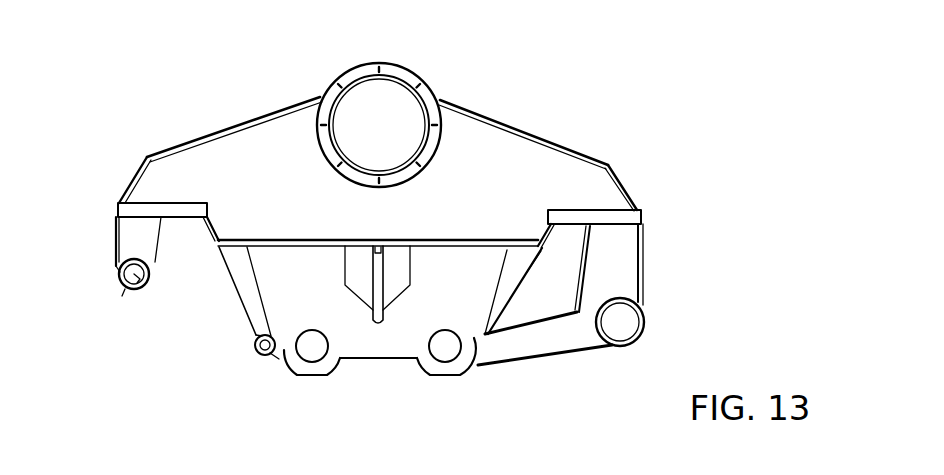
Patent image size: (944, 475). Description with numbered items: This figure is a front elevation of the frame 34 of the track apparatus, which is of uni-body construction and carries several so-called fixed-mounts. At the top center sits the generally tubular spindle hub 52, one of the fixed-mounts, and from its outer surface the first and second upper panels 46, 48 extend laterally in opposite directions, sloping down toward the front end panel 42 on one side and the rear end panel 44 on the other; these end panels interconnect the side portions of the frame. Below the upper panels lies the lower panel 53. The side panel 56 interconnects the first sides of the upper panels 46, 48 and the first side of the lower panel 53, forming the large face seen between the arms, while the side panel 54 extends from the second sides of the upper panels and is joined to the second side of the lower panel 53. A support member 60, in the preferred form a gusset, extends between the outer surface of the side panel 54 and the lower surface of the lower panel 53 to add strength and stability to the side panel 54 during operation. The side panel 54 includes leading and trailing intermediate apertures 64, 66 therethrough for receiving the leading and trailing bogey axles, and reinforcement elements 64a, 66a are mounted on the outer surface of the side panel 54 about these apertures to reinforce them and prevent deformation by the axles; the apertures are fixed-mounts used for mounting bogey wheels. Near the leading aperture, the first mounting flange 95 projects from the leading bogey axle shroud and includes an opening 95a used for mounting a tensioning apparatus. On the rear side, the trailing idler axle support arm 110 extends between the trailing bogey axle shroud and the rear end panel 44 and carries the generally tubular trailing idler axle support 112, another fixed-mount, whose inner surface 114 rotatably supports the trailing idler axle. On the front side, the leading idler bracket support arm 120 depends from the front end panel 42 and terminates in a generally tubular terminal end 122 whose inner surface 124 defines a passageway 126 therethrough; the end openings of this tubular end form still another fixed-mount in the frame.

The frame 34 is at (222, 93).
The front end panel 42 is at (137, 163).
The rear end panel 44 is at (623, 173).
The first upper panel 46 is at (459, 107).
The second upper panel 48 is at (278, 108).
The spindle hub 52 is at (400, 72).
The lower panel 53 is at (305, 238).
The side panel 54 is at (391, 352).
The side panel 56 is at (469, 169).
The support member 60 is at (379, 275).
The leading intermediate aperture 64 is at (312, 340).
The reinforcement element 64a is at (323, 370).
The trailing intermediate aperture 66 is at (445, 335).
The reinforcement element 66a is at (463, 367).
The first mounting flange 95 is at (258, 338).
The opening 95a is at (256, 345).
The trailing idler axle support arm 110 is at (646, 243).
The trailing idler axle support 112 is at (628, 348).
The inner surface 114 is at (624, 302).
The leading idler bracket support arm 120 is at (113, 238).
The terminal end 122 is at (127, 292).
The inner surface 124 is at (141, 285).
The passageway 126 is at (151, 268).